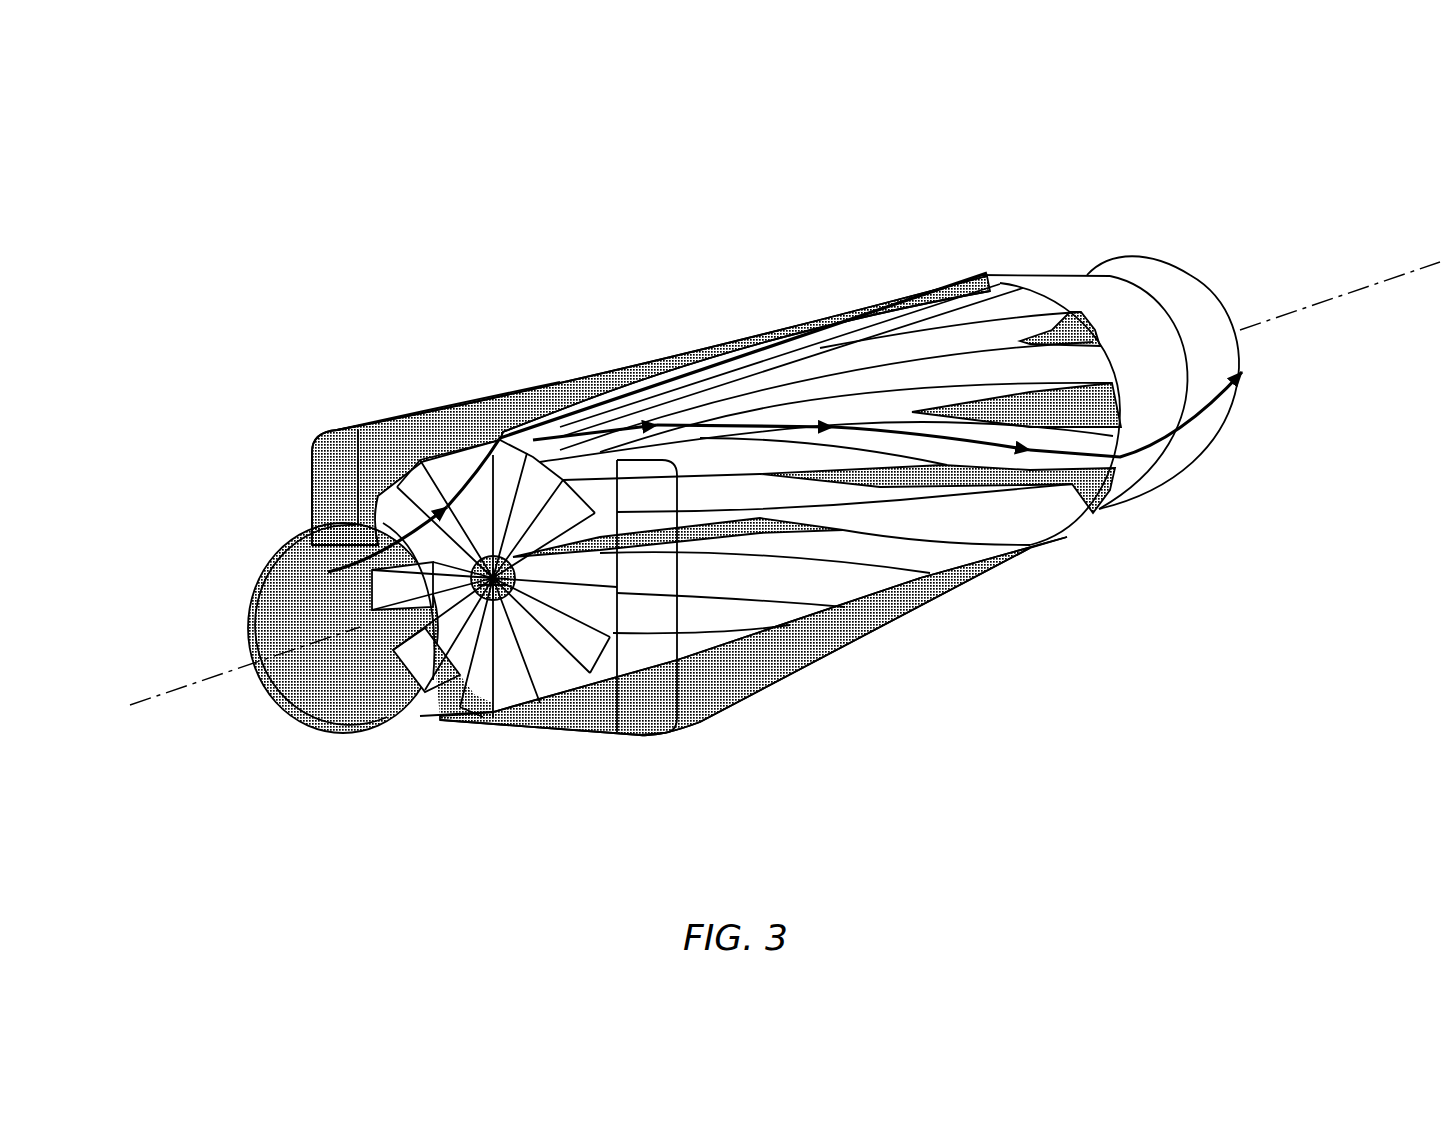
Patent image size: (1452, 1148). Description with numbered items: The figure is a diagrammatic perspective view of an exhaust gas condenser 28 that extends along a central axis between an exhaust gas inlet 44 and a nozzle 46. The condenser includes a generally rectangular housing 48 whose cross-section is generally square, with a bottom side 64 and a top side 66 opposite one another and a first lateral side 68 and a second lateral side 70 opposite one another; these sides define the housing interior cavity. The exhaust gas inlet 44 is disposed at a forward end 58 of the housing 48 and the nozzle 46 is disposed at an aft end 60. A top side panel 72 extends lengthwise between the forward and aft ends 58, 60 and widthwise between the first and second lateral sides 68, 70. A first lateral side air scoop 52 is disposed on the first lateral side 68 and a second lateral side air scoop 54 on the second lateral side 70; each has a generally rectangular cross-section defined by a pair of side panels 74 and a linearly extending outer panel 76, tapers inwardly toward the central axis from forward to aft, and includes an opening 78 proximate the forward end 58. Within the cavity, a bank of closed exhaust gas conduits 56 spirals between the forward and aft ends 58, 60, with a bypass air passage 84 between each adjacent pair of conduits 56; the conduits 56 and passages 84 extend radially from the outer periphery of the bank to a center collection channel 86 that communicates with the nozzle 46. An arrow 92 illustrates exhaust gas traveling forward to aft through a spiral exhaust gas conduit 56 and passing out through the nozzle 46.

The exhaust gas condenser 28 is at (478, 112).
The exhaust gas inlet 44 is at (340, 747).
The nozzle 46 is at (1229, 252).
The housing 48 is at (697, 249).
The first lateral side air scoop 52 is at (303, 493).
The second lateral side air scoop 54 is at (643, 740).
The exhaust gas conduits 56 is at (507, 463).
The forward end 58 is at (443, 720).
The aft end 60 is at (1100, 508).
The bottom side 64 is at (590, 727).
The top side 66 is at (776, 326).
The first lateral side 68 is at (353, 463).
The second lateral side 70 is at (660, 722).
The top side panel 72 is at (561, 388).
The side panels 74 is at (347, 430).
The outer panel 76 is at (307, 517).
The opening 78 is at (307, 470).
The bypass air passage 84 is at (1147, 475).
The center collection channel 86 is at (520, 720).
The arrow 92 is at (1181, 407).